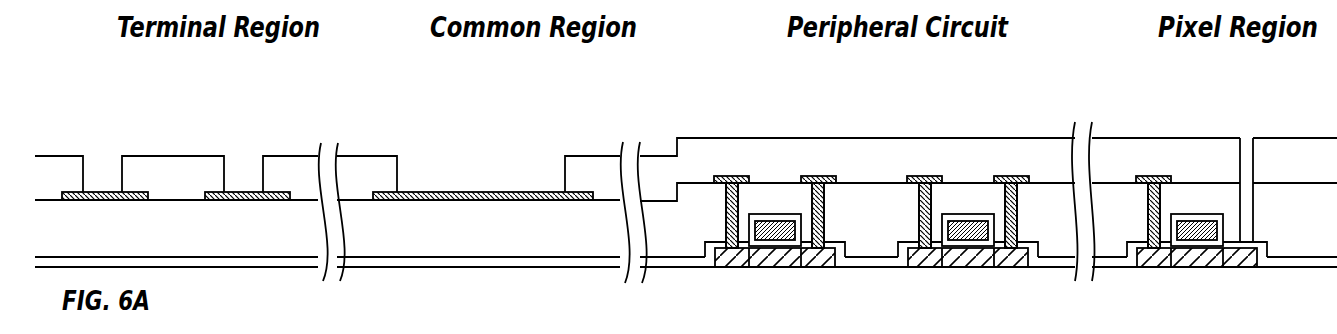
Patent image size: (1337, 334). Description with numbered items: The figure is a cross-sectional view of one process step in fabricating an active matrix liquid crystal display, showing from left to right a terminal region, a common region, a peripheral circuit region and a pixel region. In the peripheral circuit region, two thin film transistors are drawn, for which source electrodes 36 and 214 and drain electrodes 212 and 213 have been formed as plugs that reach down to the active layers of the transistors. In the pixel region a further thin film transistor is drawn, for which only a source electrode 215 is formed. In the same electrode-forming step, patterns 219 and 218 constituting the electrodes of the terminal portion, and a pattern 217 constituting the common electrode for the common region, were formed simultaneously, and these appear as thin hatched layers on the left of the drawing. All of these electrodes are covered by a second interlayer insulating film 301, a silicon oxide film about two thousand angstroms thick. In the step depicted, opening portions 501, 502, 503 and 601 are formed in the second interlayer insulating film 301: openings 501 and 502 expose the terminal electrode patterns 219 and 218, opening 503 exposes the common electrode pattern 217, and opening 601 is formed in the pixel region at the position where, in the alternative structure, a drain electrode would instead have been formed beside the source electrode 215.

The source electrode 36 is at (732, 177).
The drain electrode 212 is at (818, 177).
The drain electrode 213 is at (922, 175).
The source electrode 214 is at (1000, 175).
The source electrode 215 is at (1148, 175).
The pattern constituting the common electrode 217 is at (475, 202).
The pattern constituting an electrode of the terminal portion 218 is at (242, 202).
The pattern constituting an electrode of the terminal portion 219 is at (138, 202).
The second interlayer insulating film 301 is at (688, 152).
The opening portion 501 is at (97, 157).
The opening portion 502 is at (233, 157).
The opening portion 503 is at (440, 157).
The opening 601 is at (1247, 135).